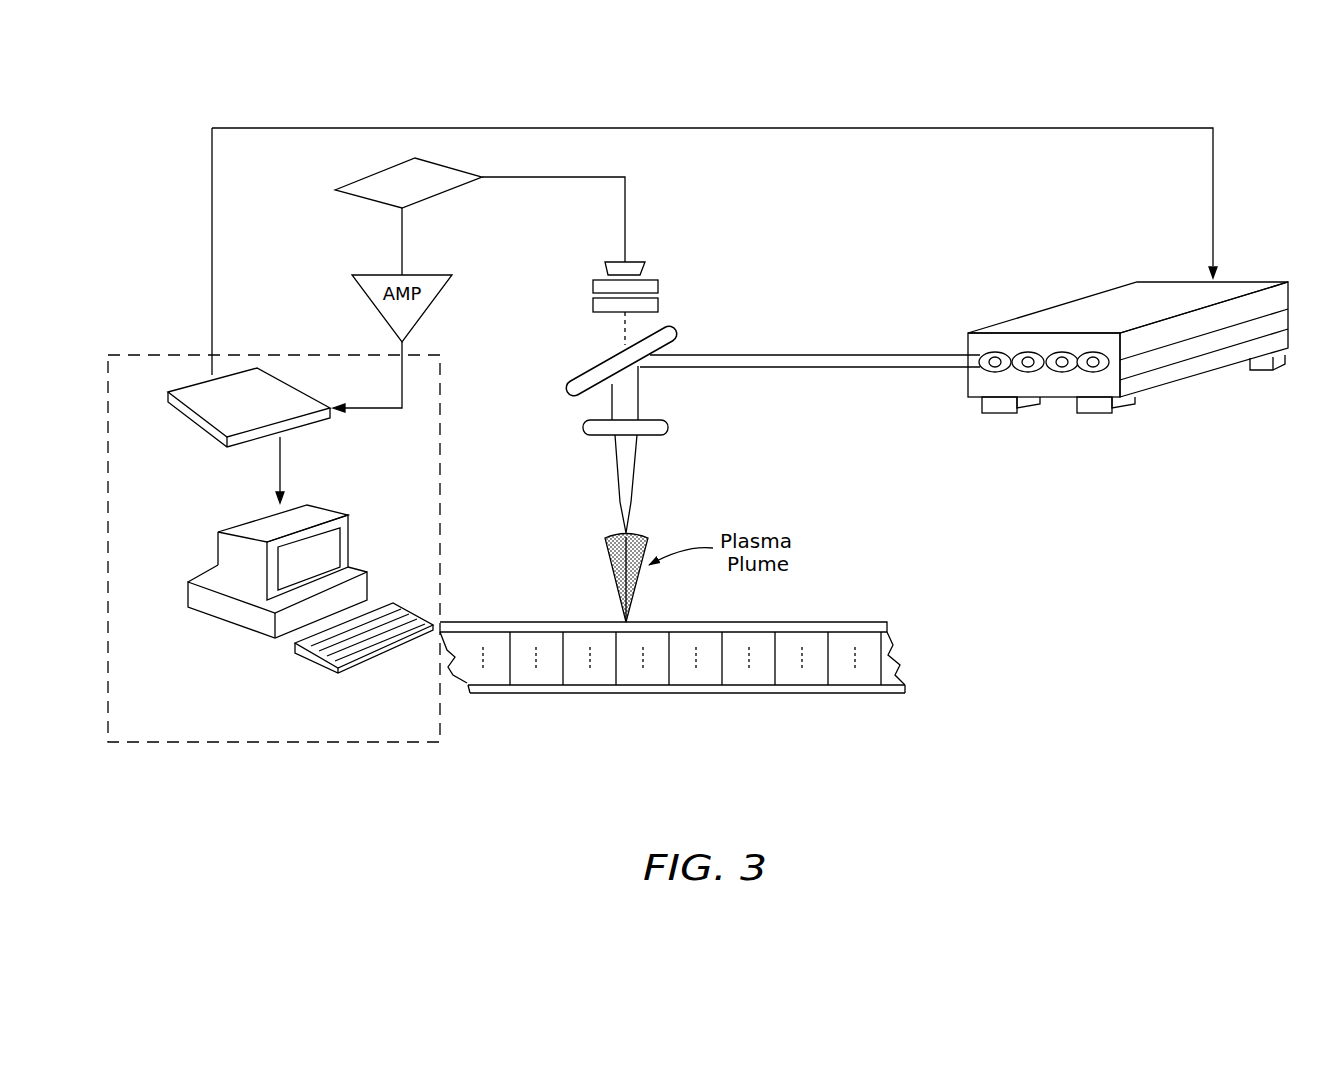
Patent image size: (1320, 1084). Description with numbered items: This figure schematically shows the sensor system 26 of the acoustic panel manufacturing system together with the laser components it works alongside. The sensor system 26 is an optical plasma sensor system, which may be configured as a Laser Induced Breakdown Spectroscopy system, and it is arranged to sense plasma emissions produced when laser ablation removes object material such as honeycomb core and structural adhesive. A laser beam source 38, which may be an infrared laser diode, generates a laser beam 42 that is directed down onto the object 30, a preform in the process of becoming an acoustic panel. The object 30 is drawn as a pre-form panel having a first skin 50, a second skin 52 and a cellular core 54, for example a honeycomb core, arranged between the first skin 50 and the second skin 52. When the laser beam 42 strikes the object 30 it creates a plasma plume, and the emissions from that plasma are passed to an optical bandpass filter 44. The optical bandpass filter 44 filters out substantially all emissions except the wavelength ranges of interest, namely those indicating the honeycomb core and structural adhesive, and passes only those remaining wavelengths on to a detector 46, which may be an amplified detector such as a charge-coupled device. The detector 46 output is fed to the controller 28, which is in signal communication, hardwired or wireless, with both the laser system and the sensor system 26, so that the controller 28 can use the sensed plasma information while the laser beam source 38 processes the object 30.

The sensor system 26 is at (601, 163).
The detector 46 is at (367, 204).
The optical bandpass filter 44 is at (663, 277).
The laser beam source 38 is at (1263, 262).
The laser beam 42 is at (638, 463).
The controller 28 is at (170, 744).
The object 30 is at (736, 635).
The first skin 50 is at (888, 628).
The cellular core 54 is at (894, 663).
The second skin 52 is at (908, 692).